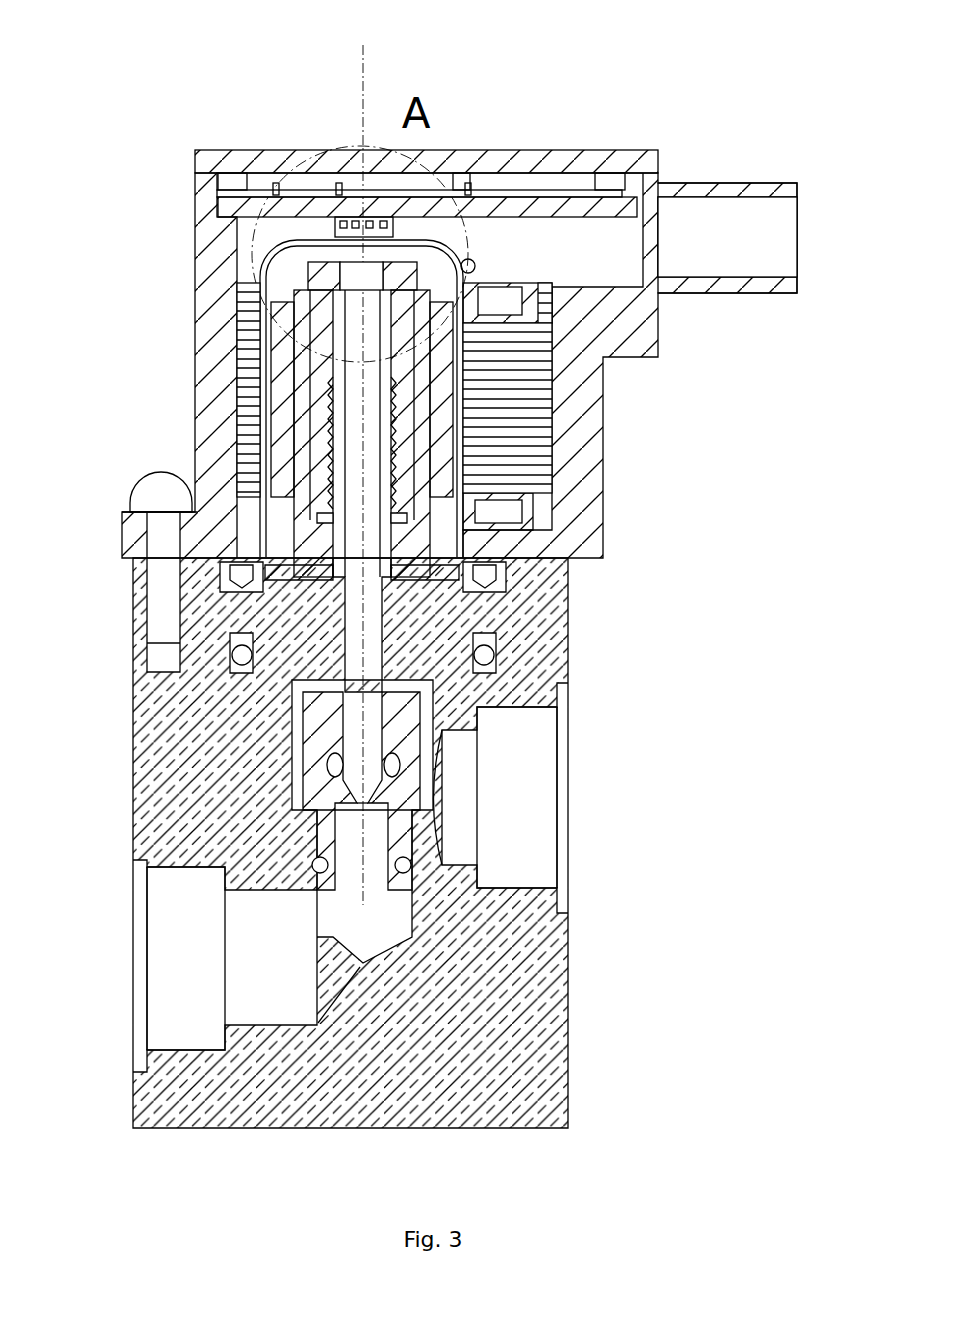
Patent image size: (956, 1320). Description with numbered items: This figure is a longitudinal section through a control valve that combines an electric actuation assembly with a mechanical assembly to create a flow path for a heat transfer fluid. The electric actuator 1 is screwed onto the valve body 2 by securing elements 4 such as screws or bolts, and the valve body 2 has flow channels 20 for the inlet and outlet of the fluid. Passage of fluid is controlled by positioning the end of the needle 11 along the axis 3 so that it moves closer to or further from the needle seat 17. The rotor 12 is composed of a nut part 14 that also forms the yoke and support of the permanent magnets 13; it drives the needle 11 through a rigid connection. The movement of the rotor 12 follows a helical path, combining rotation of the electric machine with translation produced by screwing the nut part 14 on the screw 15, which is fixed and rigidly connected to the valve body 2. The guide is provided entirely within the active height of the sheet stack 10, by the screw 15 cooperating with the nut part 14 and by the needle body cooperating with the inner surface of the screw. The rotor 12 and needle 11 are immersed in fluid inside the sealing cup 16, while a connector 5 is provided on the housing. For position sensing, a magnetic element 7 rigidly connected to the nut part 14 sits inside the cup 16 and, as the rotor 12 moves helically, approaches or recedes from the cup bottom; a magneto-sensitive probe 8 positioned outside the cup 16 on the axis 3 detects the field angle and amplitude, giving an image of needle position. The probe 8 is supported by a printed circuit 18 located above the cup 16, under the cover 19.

The electric actuator 1 is at (603, 523).
The valve body 2 is at (530, 978).
The axis 3 is at (369, 52).
The securing elements 4 is at (158, 500).
The connector 5 is at (715, 190).
The magnetic element 7 is at (320, 270).
The magneto-sensitive probe 8 is at (348, 224).
The sheet stack 10 is at (518, 412).
The needle 11 is at (362, 612).
The rotor 12 is at (302, 375).
The permanent magnets 13 is at (440, 320).
The nut part 14 is at (398, 437).
The screw 15 is at (322, 435).
The sealing cup 16 is at (262, 245).
The needle seat 17 is at (400, 788).
The printed circuit 18 is at (547, 205).
The cover 19 is at (530, 158).
The flow channels 20 is at (167, 943).